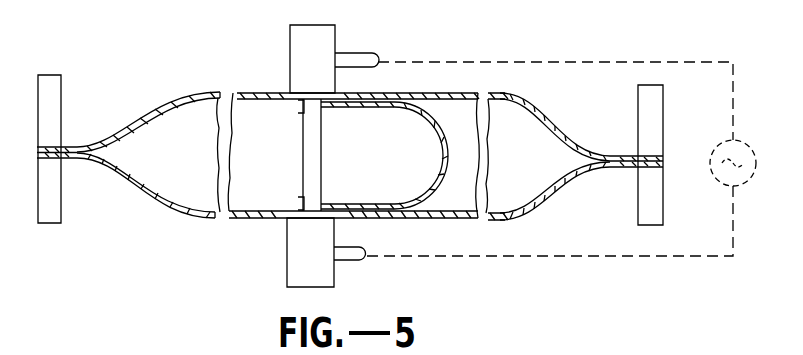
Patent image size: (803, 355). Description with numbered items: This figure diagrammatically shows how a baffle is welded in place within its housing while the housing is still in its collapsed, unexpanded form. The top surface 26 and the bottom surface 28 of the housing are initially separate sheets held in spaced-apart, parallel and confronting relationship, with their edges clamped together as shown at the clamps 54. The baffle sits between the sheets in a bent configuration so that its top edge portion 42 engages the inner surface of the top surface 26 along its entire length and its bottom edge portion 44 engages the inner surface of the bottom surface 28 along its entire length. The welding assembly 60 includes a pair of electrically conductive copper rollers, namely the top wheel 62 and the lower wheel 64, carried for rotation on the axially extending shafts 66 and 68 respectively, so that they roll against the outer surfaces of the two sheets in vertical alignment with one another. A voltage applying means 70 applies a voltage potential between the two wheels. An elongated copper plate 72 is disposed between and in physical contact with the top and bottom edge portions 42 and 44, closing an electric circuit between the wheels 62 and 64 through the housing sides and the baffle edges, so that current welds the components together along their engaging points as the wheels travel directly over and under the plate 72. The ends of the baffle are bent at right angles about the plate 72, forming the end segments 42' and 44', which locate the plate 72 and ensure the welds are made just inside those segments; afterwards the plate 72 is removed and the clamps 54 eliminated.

The top surface 26 is at (383, 94).
The bottom surface 28 is at (385, 218).
The top edge portion 42 is at (384, 155).
The end segment 42' is at (277, 115).
The bottom edge portion 44 is at (354, 193).
The end segment 44' is at (279, 193).
The clamps 54 is at (57, 107).
The welding assembly 60 is at (288, 263).
The top wheel 62 is at (328, 62).
The lower wheel 64 is at (326, 251).
The shaft 66 is at (353, 60).
The shaft 68 is at (350, 256).
The voltage applying means 70 is at (733, 142).
The electrically conductive plate 72 is at (318, 167).